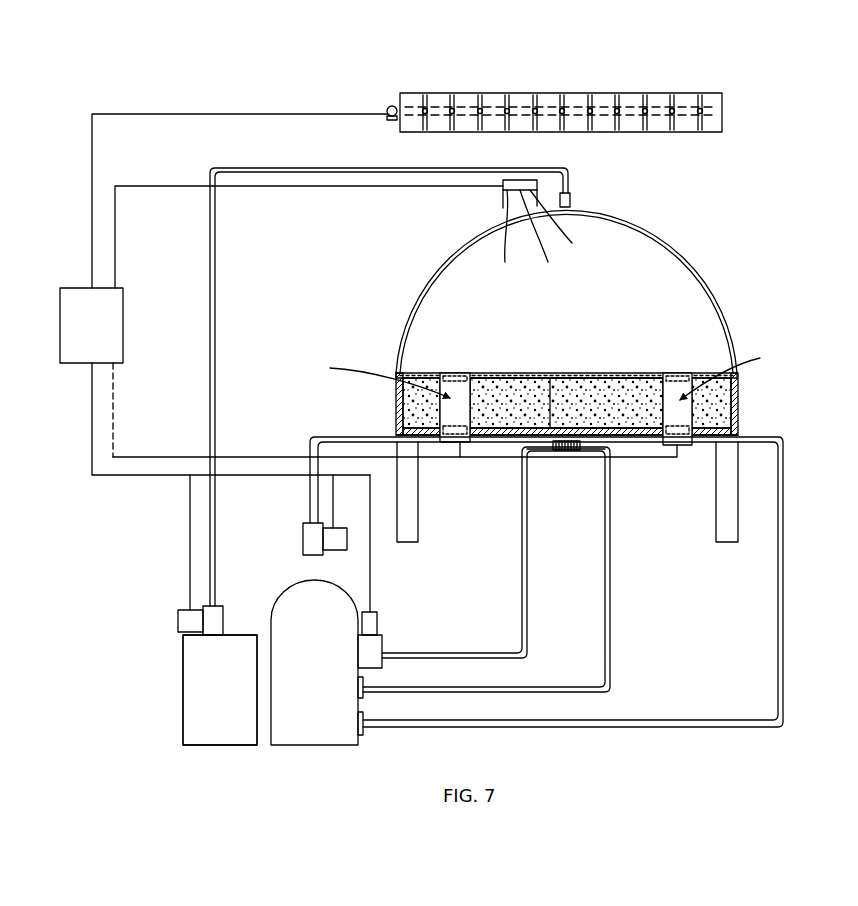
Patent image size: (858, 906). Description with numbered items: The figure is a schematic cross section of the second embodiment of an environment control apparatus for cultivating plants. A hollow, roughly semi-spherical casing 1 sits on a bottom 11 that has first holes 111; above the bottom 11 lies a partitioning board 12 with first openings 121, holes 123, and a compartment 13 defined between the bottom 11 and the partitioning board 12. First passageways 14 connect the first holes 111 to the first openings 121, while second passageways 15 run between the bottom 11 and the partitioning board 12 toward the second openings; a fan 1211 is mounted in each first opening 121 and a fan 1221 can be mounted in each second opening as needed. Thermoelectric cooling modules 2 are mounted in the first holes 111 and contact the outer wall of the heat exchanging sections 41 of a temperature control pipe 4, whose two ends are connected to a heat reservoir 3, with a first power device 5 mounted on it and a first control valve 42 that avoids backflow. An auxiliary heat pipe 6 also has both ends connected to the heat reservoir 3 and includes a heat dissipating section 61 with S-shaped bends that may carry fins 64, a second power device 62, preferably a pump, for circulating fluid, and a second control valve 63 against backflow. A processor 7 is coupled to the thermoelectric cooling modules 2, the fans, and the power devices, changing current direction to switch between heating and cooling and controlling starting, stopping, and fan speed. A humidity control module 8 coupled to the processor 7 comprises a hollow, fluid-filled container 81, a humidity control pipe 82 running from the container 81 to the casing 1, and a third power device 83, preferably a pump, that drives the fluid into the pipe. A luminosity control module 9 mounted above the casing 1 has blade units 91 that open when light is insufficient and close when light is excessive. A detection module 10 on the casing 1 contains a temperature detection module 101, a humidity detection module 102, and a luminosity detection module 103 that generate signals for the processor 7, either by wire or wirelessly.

The casing 1 is at (672, 238).
The detection module 10 is at (500, 200).
The temperature detection module 101 is at (572, 228).
The humidity detection module 102 is at (543, 241).
The luminosity detection module 103 is at (503, 241).
The bottom 11 is at (710, 445).
The first holes 111 is at (400, 427).
The partitioning board 12 is at (655, 373).
The first openings 121 is at (445, 375).
The fan 1211 is at (455, 375).
The fan 1221 is at (680, 373).
The holes 123 is at (497, 375).
The compartment 13 is at (494, 442).
The first passageways 14 is at (540, 370).
The second passageways 15 is at (588, 378).
The thermoelectric cooling modules 2 is at (398, 413).
The heat reservoir 3 is at (286, 577).
The temperature control pipe 4 is at (783, 585).
The heat exchanging sections 41 is at (455, 445).
The first control valve 42 is at (365, 735).
The first power device 5 is at (303, 538).
The auxiliary heat pipe 6 is at (610, 490).
The heat dissipating sections 61 is at (585, 452).
The second power device 62 is at (378, 622).
The second control valve 63 is at (383, 675).
The fins 64 is at (560, 450).
The processor 7 is at (78, 295).
The humidity control module 8 is at (168, 712).
The container 81 is at (195, 672).
The humidity control pipe 82 is at (210, 300).
The third power device 83 is at (180, 615).
The luminosity control module 9 is at (708, 93).
The blade units 91 is at (702, 117).